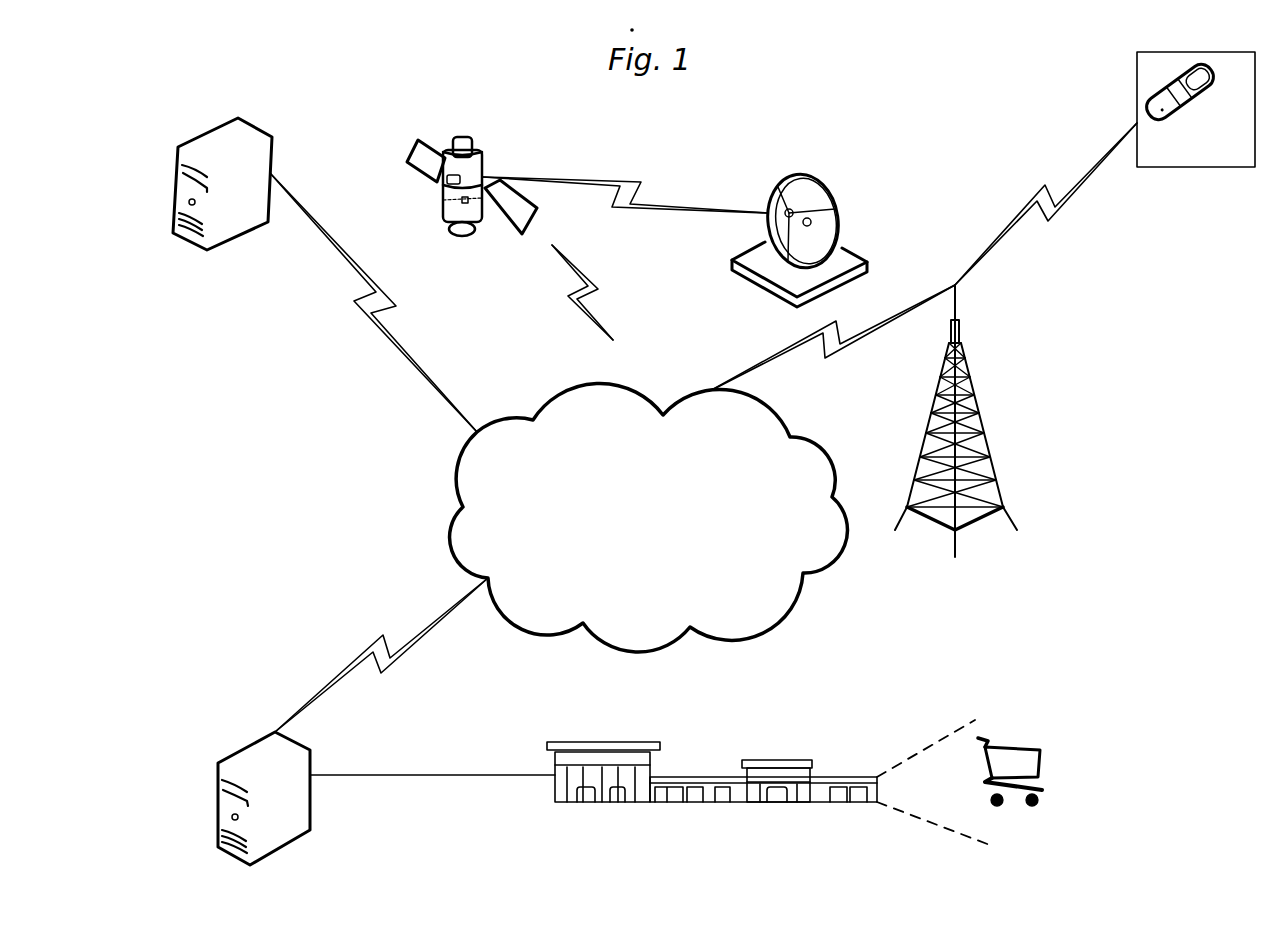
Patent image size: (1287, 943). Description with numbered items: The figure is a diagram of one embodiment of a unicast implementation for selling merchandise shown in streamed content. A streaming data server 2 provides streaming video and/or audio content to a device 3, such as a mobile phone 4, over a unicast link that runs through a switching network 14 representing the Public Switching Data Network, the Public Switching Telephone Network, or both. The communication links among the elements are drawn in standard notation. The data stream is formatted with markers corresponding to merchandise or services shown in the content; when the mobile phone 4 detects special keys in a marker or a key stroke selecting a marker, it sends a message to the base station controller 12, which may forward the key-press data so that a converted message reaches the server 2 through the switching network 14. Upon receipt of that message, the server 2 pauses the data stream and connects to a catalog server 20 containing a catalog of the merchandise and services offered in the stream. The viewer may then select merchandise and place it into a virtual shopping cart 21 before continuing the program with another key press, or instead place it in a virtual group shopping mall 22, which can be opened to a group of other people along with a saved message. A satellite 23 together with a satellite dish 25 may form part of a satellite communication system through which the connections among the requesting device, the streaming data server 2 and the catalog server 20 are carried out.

The streaming data server 2 is at (225, 140).
The satellite 23 is at (472, 140).
The satellite dish 25 is at (840, 208).
The mobile phone 4 is at (1145, 113).
The device 3 is at (1150, 167).
The base station controller 12 is at (955, 533).
The switching network 14 is at (660, 601).
The virtual group shopping mall 22 is at (660, 748).
The virtual shopping cart 21 is at (1040, 755).
The catalog server 20 is at (283, 807).